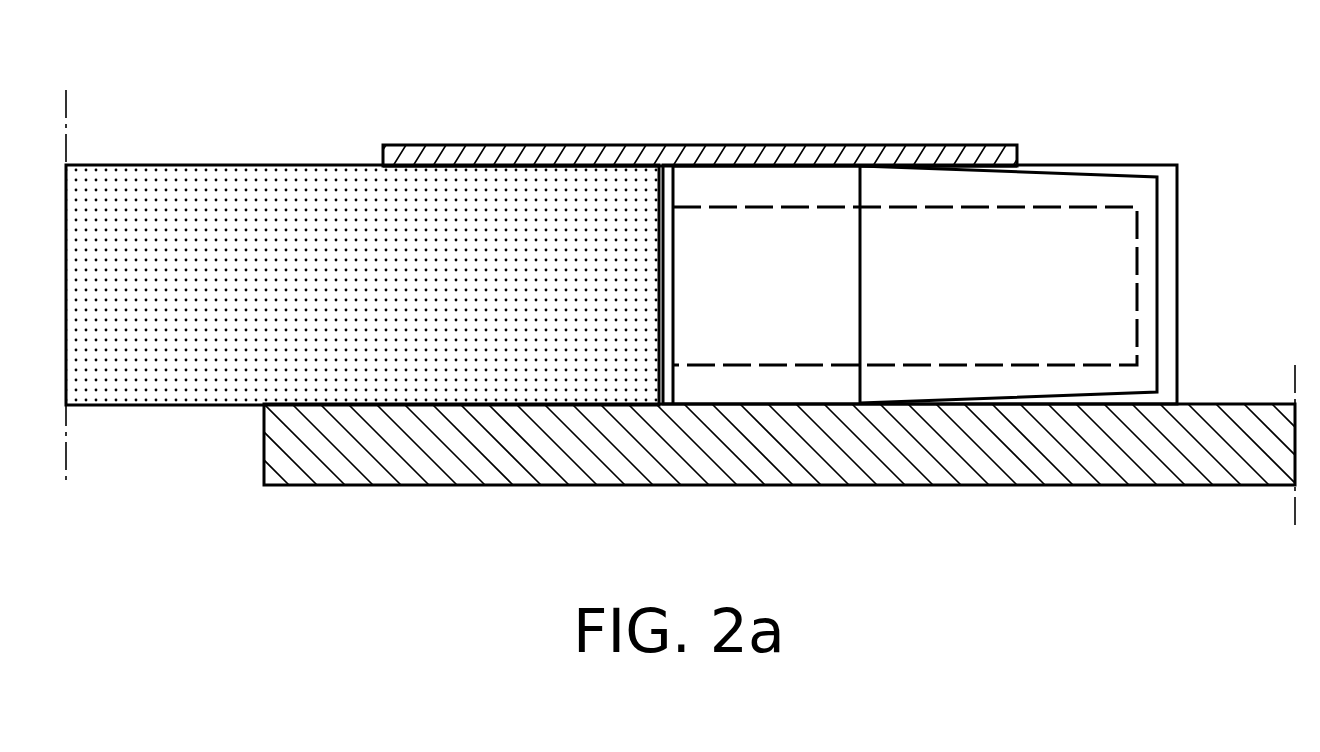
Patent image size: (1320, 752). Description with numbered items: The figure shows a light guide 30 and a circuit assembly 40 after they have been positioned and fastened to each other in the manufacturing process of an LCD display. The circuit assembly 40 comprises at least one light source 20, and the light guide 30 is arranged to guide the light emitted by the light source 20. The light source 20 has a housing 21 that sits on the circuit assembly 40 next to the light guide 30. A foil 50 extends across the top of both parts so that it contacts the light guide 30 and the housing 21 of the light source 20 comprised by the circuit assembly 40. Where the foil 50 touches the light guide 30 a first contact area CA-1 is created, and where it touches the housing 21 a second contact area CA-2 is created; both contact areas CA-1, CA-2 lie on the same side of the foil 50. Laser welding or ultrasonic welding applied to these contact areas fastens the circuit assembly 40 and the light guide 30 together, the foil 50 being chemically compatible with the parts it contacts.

The light guide 30 is at (163, 178).
The foil 50 is at (607, 155).
The first contact area CA-1 is at (490, 155).
The second contact area CA-2 is at (765, 155).
The light source 20 is at (938, 233).
The housing 21 is at (1097, 192).
The circuit assembly 40 is at (740, 472).